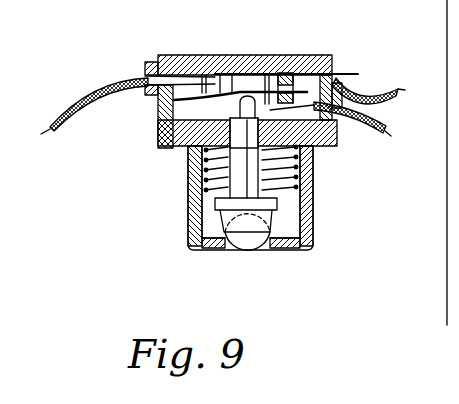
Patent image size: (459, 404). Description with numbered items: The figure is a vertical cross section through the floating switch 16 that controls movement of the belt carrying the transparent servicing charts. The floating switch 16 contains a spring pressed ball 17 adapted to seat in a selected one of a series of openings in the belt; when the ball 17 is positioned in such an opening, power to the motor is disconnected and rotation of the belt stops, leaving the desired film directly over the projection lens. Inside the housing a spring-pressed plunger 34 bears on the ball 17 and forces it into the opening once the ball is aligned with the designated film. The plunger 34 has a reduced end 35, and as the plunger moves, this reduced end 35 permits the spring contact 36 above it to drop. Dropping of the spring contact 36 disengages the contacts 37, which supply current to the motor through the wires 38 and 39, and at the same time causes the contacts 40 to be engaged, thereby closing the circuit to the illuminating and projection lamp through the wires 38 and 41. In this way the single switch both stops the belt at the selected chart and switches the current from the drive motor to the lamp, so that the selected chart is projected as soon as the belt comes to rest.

The floating switch 16 is at (331, 55).
The spring pressed ball 17 is at (255, 252).
The spring-pressed plunger 34 is at (250, 172).
The reduced end 35 is at (246, 97).
The spring contact 36 is at (233, 92).
The contacts 37 is at (338, 72).
The wire 38 is at (90, 96).
The wire 39 is at (367, 96).
The contacts 40 is at (338, 124).
The wire 41 is at (388, 123).